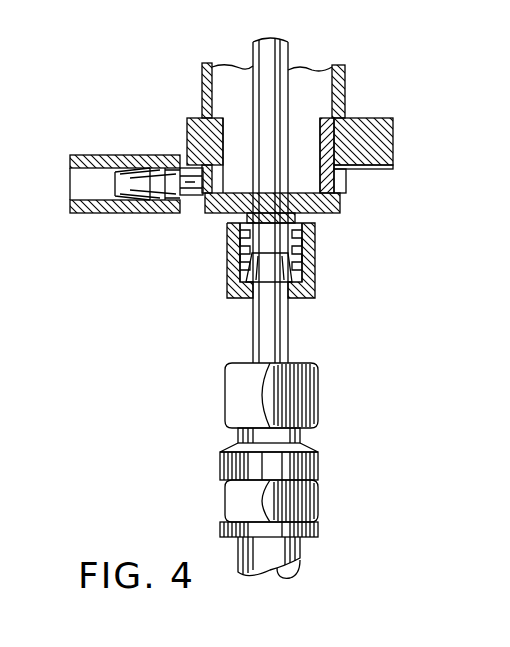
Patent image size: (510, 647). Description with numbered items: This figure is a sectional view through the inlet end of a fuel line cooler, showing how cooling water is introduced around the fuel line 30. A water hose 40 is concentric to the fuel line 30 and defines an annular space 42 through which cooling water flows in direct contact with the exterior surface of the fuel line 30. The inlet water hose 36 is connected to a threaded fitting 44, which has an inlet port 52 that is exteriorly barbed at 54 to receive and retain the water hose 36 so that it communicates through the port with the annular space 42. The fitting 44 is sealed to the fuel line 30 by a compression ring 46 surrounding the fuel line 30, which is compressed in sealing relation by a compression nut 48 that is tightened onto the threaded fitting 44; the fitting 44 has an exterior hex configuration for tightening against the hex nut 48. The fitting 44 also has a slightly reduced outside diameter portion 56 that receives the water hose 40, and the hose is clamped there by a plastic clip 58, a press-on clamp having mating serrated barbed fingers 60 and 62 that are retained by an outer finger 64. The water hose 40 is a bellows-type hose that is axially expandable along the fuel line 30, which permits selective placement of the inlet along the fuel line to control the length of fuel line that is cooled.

The fuel line 30 is at (294, 47).
The annular space 42 is at (314, 78).
The water hose 40 is at (346, 88).
The reduced outside diameter portion 56 is at (346, 118).
The outer finger 64 is at (393, 136).
The serrated barbed finger 62 is at (378, 167).
The serrated barbed finger 60 is at (356, 170).
The fitting 44 is at (345, 200).
The compression nut 48 is at (290, 266).
The compression ring 46 is at (316, 272).
The plastic clip 58 is at (186, 128).
The inlet port 52 is at (186, 164).
The water hose 36 is at (84, 217).
The barbed portion 54 is at (128, 186).